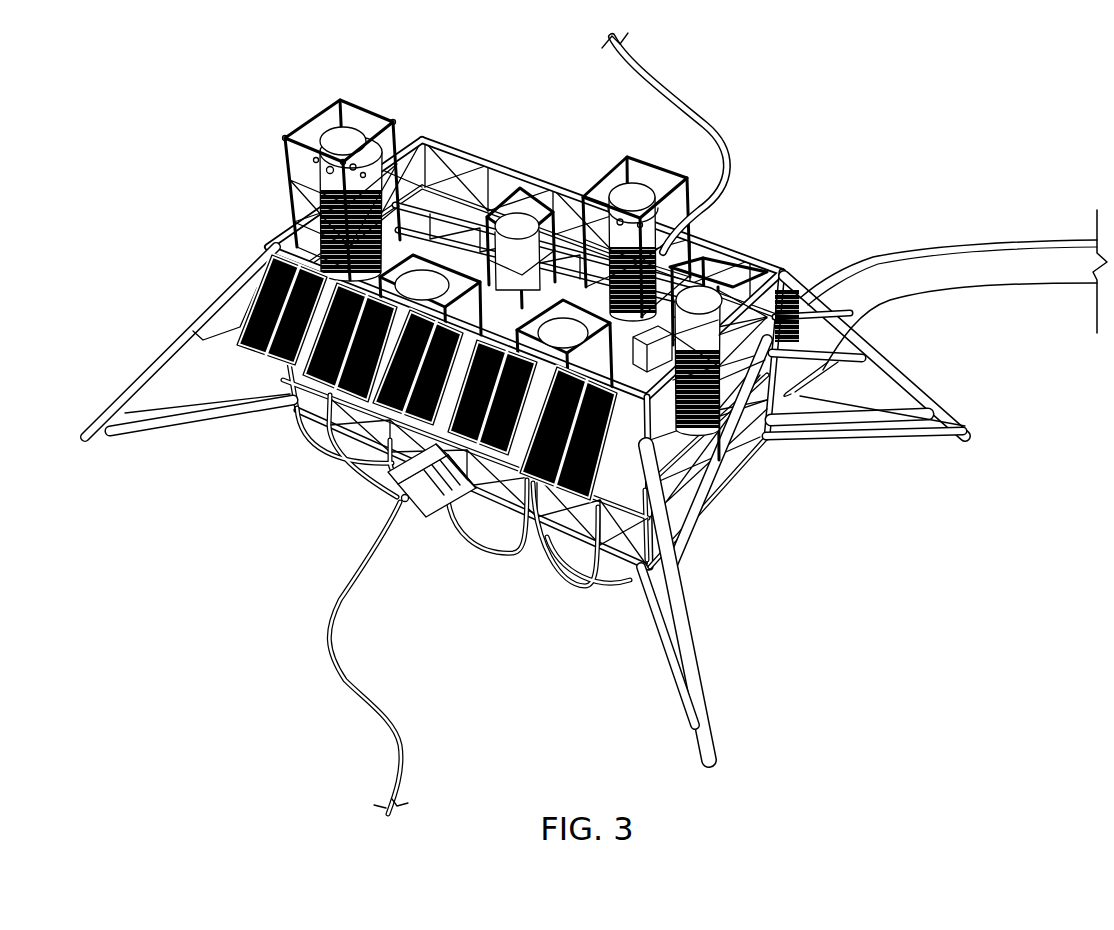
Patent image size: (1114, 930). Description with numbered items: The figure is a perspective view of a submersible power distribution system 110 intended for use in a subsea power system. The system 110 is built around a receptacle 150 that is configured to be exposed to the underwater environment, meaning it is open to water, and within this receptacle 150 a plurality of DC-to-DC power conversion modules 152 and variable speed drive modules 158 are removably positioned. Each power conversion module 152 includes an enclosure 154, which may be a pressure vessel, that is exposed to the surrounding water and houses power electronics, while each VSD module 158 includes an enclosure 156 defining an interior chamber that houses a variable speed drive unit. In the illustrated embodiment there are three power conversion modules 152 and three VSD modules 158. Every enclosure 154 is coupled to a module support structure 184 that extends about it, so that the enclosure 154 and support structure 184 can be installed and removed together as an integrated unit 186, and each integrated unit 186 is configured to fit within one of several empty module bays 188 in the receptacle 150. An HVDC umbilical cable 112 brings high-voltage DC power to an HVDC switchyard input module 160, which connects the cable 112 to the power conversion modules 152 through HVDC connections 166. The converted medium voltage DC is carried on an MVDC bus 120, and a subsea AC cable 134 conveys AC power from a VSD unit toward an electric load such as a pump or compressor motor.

The submersible power distribution system 110 is at (466, 104).
The HVDC umbilical cable 112 is at (405, 745).
The MVDC bus 120 is at (712, 470).
The subsea AC cable 134 is at (733, 143).
The receptacle 150 is at (297, 405).
The DC-to-DC power conversion module 152 is at (299, 180).
The enclosure 154 is at (290, 180).
The enclosure 156 is at (606, 216).
The variable speed drive module 158 is at (613, 165).
The HVDC switchyard input module 160 is at (430, 518).
The HVDC connections 166 is at (345, 475).
The module support structure 184 is at (332, 135).
The integrated unit 186 is at (299, 161).
The module bay 188 is at (713, 250).